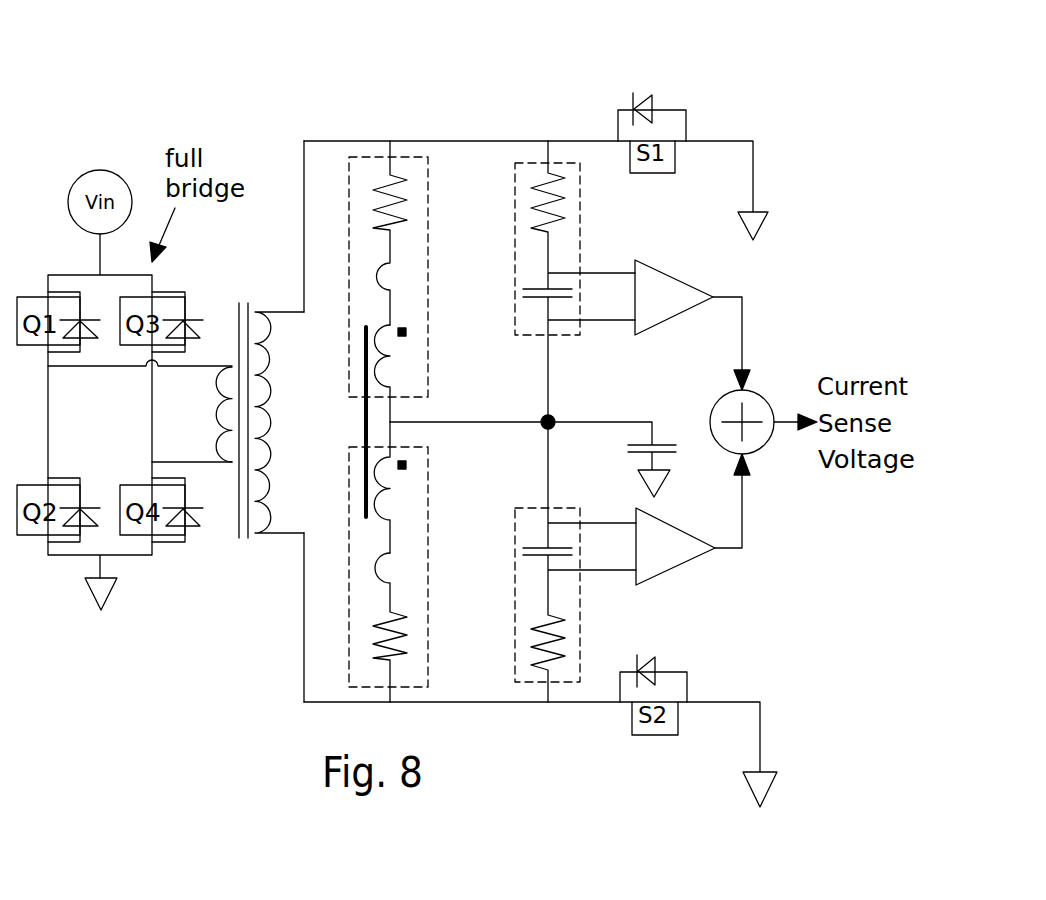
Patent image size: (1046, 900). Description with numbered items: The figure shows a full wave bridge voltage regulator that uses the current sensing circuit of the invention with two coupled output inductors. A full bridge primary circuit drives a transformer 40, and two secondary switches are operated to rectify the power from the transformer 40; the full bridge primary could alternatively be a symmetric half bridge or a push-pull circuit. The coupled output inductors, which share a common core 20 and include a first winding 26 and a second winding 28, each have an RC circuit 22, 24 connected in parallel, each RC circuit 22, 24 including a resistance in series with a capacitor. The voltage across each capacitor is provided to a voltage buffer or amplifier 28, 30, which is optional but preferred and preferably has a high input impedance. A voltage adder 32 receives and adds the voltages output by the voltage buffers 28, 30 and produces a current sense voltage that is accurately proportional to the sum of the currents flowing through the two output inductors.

The magnetic core of coupled inductor 20 is at (365, 428).
The RC circuit 22 is at (532, 163).
The RC circuit 24 is at (533, 680).
The first inductor winding 26 is at (380, 382).
The second inductor winding / first amplifier 28 is at (380, 478).
The voltage buffer 30 is at (682, 563).
The voltage adder 32 is at (762, 445).
The transformer 40 is at (238, 540).